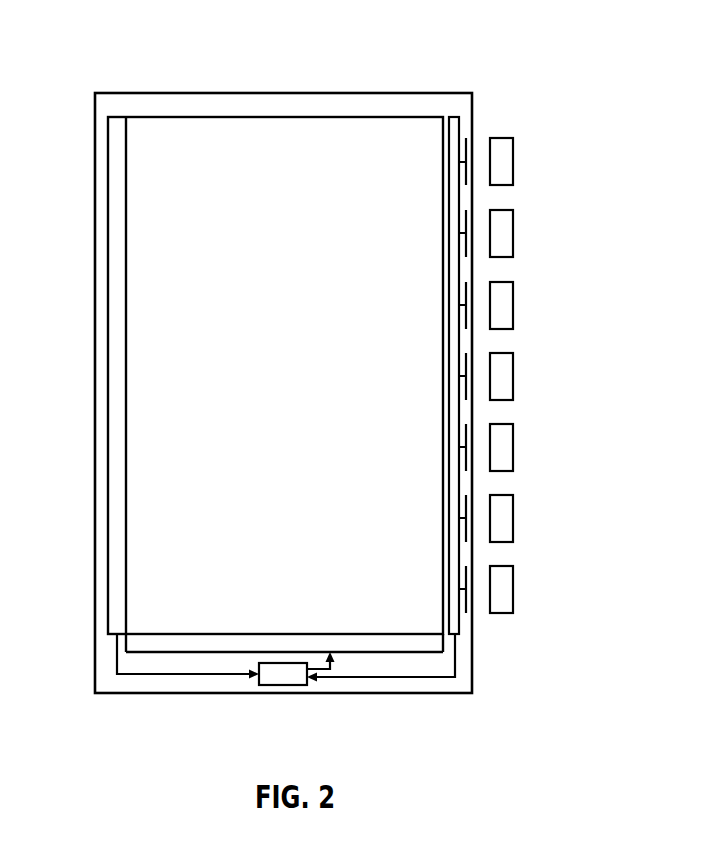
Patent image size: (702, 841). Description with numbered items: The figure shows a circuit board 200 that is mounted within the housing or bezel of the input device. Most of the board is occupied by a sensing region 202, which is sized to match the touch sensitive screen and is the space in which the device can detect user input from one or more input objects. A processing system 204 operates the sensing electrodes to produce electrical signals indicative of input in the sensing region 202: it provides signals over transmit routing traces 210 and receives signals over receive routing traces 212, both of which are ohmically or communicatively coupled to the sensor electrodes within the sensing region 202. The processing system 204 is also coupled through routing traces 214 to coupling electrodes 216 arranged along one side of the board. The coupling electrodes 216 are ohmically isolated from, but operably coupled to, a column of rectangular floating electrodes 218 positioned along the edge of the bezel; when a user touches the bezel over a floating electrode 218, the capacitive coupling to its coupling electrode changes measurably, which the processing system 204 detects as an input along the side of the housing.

The circuit board 200 is at (440, 86).
The sensing region 202 is at (305, 263).
The processing system 204 is at (284, 685).
The transmit routing traces 210 is at (382, 653).
The receive routing traces 212 is at (117, 357).
The routing traces 214 is at (453, 623).
The coupling electrodes 216 is at (480, 133).
The floating electrodes 218 is at (500, 233).